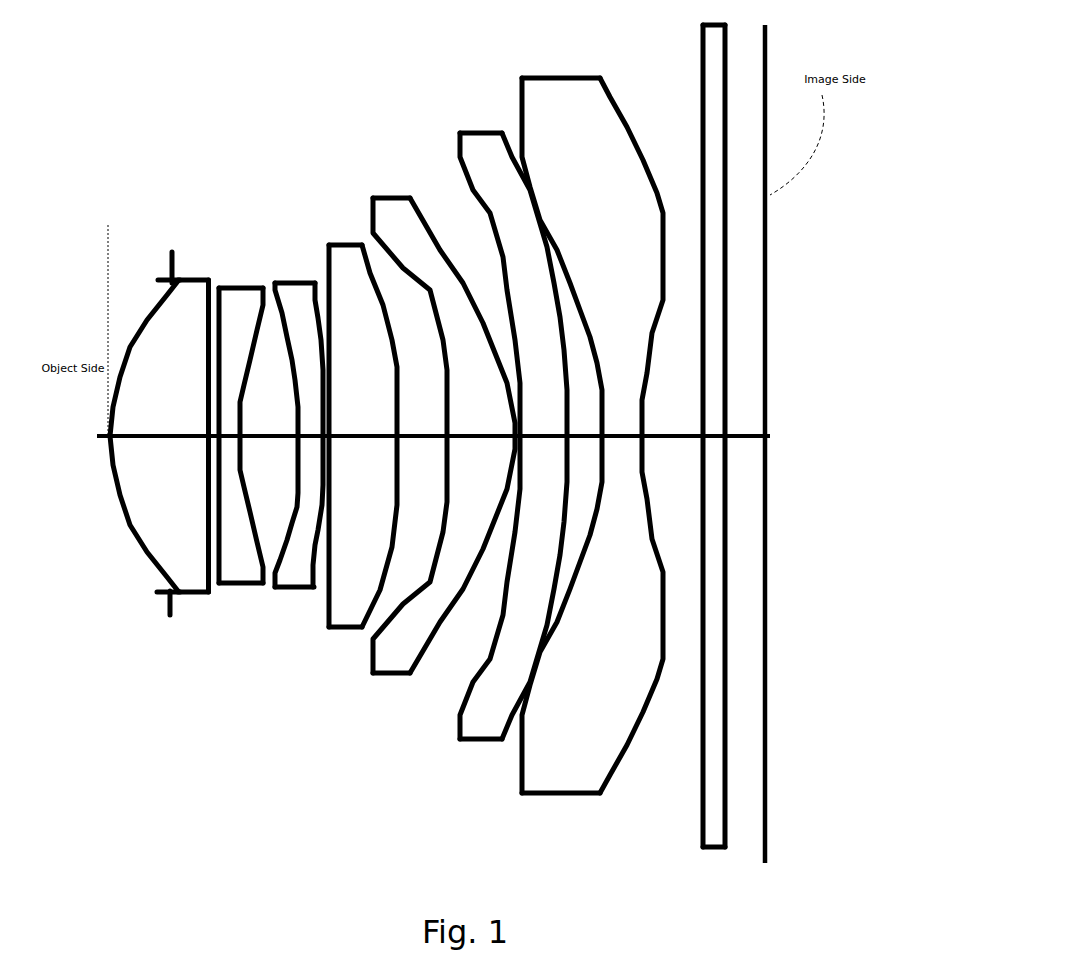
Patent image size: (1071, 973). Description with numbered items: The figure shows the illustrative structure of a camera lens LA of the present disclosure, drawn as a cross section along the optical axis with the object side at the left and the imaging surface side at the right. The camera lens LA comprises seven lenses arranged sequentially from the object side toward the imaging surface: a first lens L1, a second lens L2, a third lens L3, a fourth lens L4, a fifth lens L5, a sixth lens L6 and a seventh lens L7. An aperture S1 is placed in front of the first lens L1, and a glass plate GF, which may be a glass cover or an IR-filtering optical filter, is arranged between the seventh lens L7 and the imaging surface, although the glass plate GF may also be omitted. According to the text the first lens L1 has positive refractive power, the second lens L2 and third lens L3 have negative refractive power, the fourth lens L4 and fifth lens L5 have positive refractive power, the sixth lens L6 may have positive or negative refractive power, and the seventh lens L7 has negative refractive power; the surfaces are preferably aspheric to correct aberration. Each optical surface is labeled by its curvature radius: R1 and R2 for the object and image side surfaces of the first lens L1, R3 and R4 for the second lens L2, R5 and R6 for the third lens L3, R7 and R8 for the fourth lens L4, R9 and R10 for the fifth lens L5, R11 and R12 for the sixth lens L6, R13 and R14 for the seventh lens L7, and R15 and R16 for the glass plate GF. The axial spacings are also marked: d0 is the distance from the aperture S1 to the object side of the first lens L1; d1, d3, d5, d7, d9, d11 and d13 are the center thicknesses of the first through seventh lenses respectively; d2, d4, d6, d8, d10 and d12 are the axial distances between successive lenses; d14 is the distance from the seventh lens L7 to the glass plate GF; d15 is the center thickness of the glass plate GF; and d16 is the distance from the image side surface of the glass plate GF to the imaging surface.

The camera lens LA is at (131, 111).
The aperture S1 is at (173, 252).
The first lens L1 is at (135, 436).
The second lens L2 is at (206, 485).
The third lens L3 is at (272, 472).
The fourth lens L4 is at (340, 471).
The fifth lens L5 is at (430, 447).
The sixth lens L6 is at (483, 456).
The seventh lens L7 is at (573, 480).
The glass plate GF is at (663, 449).
The curvature radius of the first lens object side surface R1 is at (106, 453).
The curvature radius of the first lens image side surface R2 is at (204, 453).
The curvature radius of the second lens object side surface R3 is at (217, 487).
The curvature radius of the second lens image side surface R4 is at (240, 483).
The curvature radius of the third lens object side surface R5 is at (296, 478).
The curvature radius of the third lens image side surface R6 is at (321, 480).
The curvature radius of the fourth lens object side surface R7 is at (329, 515).
The curvature radius of the fourth lens image side surface R8 is at (397, 508).
The curvature radius of the fifth lens object side surface R9 is at (447, 522).
The curvature radius of the fifth lens image side surface R10 is at (506, 492).
The curvature radius of the sixth lens object side surface R11 is at (518, 502).
The curvature radius of the sixth lens image side surface R12 is at (565, 500).
The curvature radius of the seventh lens object side surface R13 is at (600, 512).
The curvature radius of the seventh lens image side surface R14 is at (660, 570).
The curvature radius of the glass plate object side surface R15 is at (703, 560).
The curvature radius of the glass plate image side surface R16 is at (725, 555).
The distance from aperture to first lens d0 is at (108, 267).
The center thickness of the first lens d1 is at (159, 423).
The distance from first lens to second lens d2 is at (213, 280).
The center thickness of the second lens d3 is at (225, 423).
The axial distance from second lens to third lens d4 is at (268, 423).
The center thickness of the third lens d5 is at (307, 423).
The axial distance from third lens to fourth lens d6 is at (324, 425).
The center thickness of the fourth lens d7 is at (359, 423).
The axial distance from fourth lens to fifth lens d8 is at (420, 423).
The center thickness of the fifth lens d9 is at (476, 423).
The axial distance from fifth lens to sixth lens d10 is at (512, 423).
The center thickness of the sixth lens d11 is at (544, 423).
The axial distance from sixth lens to seventh lens d12 is at (584, 423).
The center thickness of the seventh lens d13 is at (621, 423).
The axial distance from seventh lens to glass plate d14 is at (669, 423).
The center thickness of the glass plate d15 is at (712, 430).
The axial distance from glass plate to imaging surface d16 is at (744, 423).